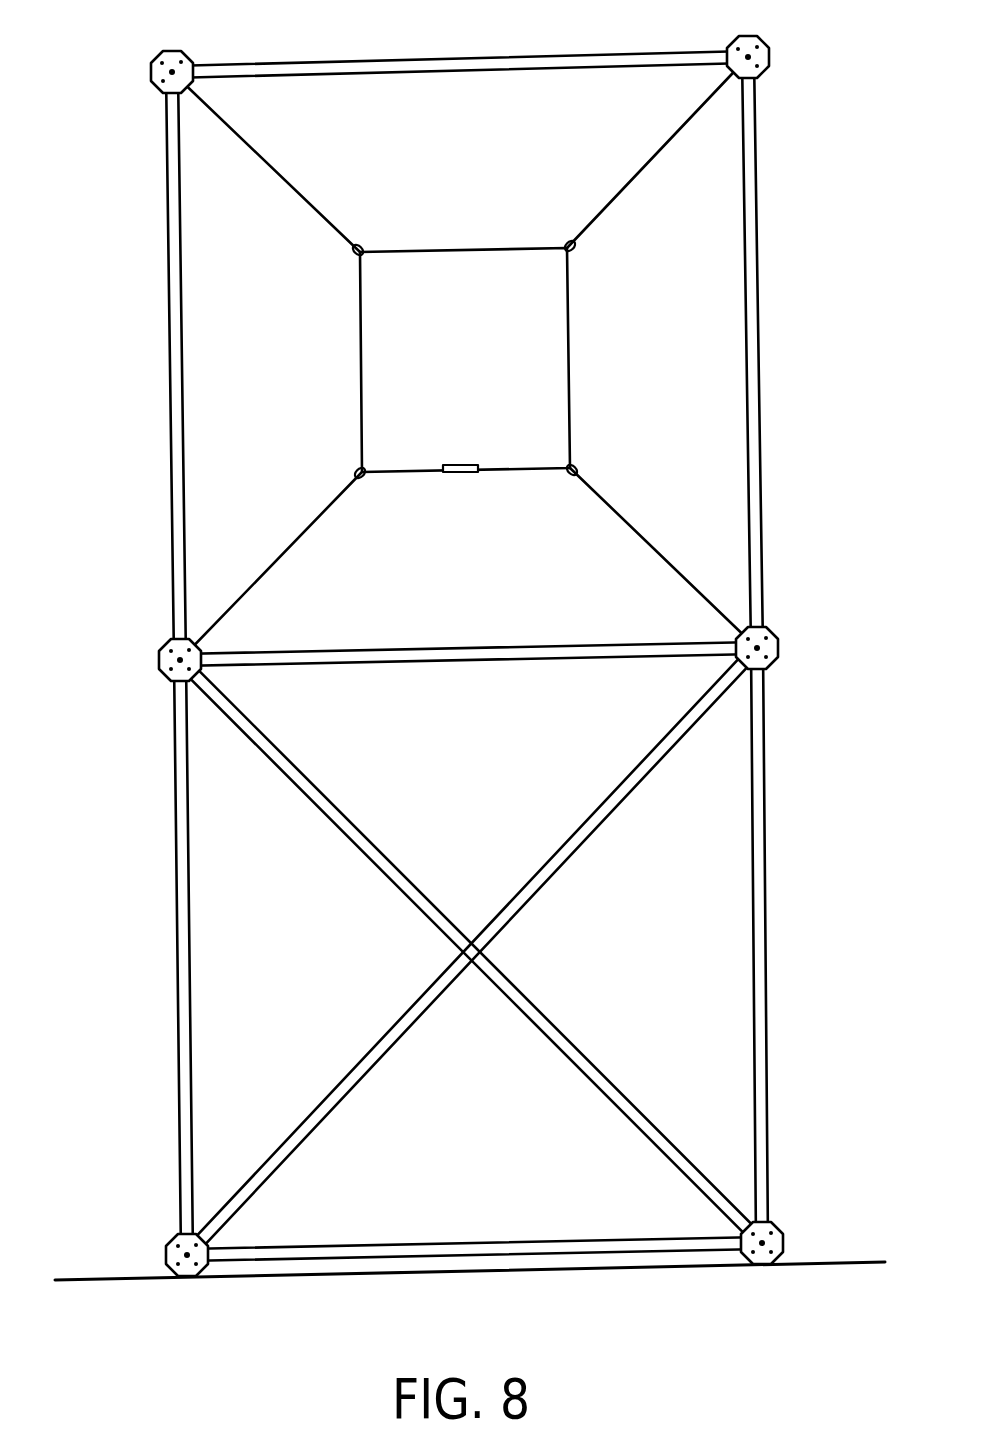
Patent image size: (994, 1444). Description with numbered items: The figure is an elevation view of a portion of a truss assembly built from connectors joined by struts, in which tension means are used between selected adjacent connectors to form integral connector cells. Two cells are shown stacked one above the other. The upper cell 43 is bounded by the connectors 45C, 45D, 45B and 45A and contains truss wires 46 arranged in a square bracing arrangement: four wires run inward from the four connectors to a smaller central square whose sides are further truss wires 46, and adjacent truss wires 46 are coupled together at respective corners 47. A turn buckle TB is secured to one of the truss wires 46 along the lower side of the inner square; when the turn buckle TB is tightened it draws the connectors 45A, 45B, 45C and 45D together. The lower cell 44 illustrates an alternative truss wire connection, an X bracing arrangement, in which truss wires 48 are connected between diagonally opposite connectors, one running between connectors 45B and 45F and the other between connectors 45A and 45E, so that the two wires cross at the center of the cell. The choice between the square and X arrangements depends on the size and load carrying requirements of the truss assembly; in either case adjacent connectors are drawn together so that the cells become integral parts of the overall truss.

The upper cell 43 is at (158, 369).
The cell 44 is at (158, 881).
The connector 45A is at (778, 640).
The connector 45B is at (159, 656).
The connector 45C is at (160, 62).
The connector 45D is at (747, 35).
The connector 45E is at (177, 1242).
The connector 45F is at (777, 1232).
The truss wires 46 is at (264, 156).
The corners 47 is at (362, 255).
The truss wires 48 is at (556, 873).
The turn buckle TB is at (452, 472).